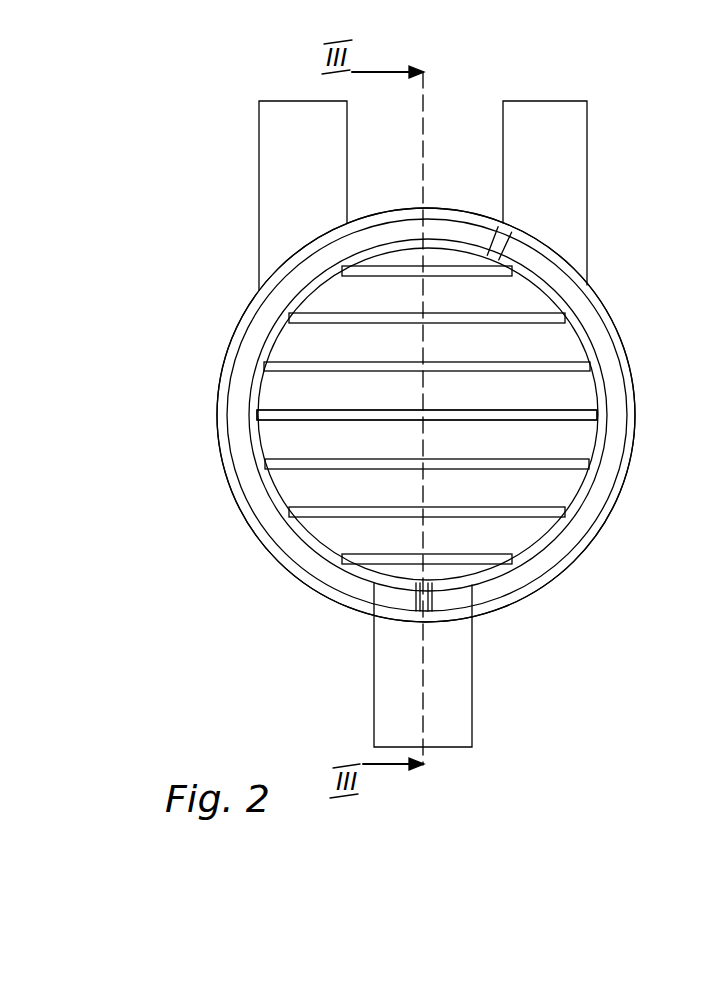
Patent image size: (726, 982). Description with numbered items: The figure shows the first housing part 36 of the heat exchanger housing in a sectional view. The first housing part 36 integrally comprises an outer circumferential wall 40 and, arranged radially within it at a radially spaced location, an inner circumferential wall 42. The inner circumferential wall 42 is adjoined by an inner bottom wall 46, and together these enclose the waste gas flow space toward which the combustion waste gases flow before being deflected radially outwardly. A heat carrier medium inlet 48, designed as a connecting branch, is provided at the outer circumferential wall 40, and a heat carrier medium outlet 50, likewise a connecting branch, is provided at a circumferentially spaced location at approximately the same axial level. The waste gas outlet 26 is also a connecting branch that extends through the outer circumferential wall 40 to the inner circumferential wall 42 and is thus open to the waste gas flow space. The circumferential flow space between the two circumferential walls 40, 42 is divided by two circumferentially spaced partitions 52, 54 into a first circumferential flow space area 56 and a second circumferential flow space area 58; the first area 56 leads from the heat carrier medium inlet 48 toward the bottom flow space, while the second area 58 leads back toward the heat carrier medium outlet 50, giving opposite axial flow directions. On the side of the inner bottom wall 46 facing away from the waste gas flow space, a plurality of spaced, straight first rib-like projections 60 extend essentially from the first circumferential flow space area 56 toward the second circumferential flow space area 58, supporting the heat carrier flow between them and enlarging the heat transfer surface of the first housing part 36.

The waste gas outlet 26 is at (373, 687).
The first housing part 36 is at (230, 570).
The outer circumferential wall 40 is at (620, 373).
The inner circumferential wall 42 is at (580, 495).
The inner bottom wall 46 is at (303, 342).
The heat carrier medium inlet 48 is at (592, 205).
The heat carrier medium outlet 50 is at (253, 188).
The partition 52 is at (487, 230).
The partition 54 is at (450, 607).
The first circumferential flow space area 56 is at (588, 320).
The second circumferential flow space area 58 is at (240, 373).
The first rib-like projections 60 is at (530, 420).